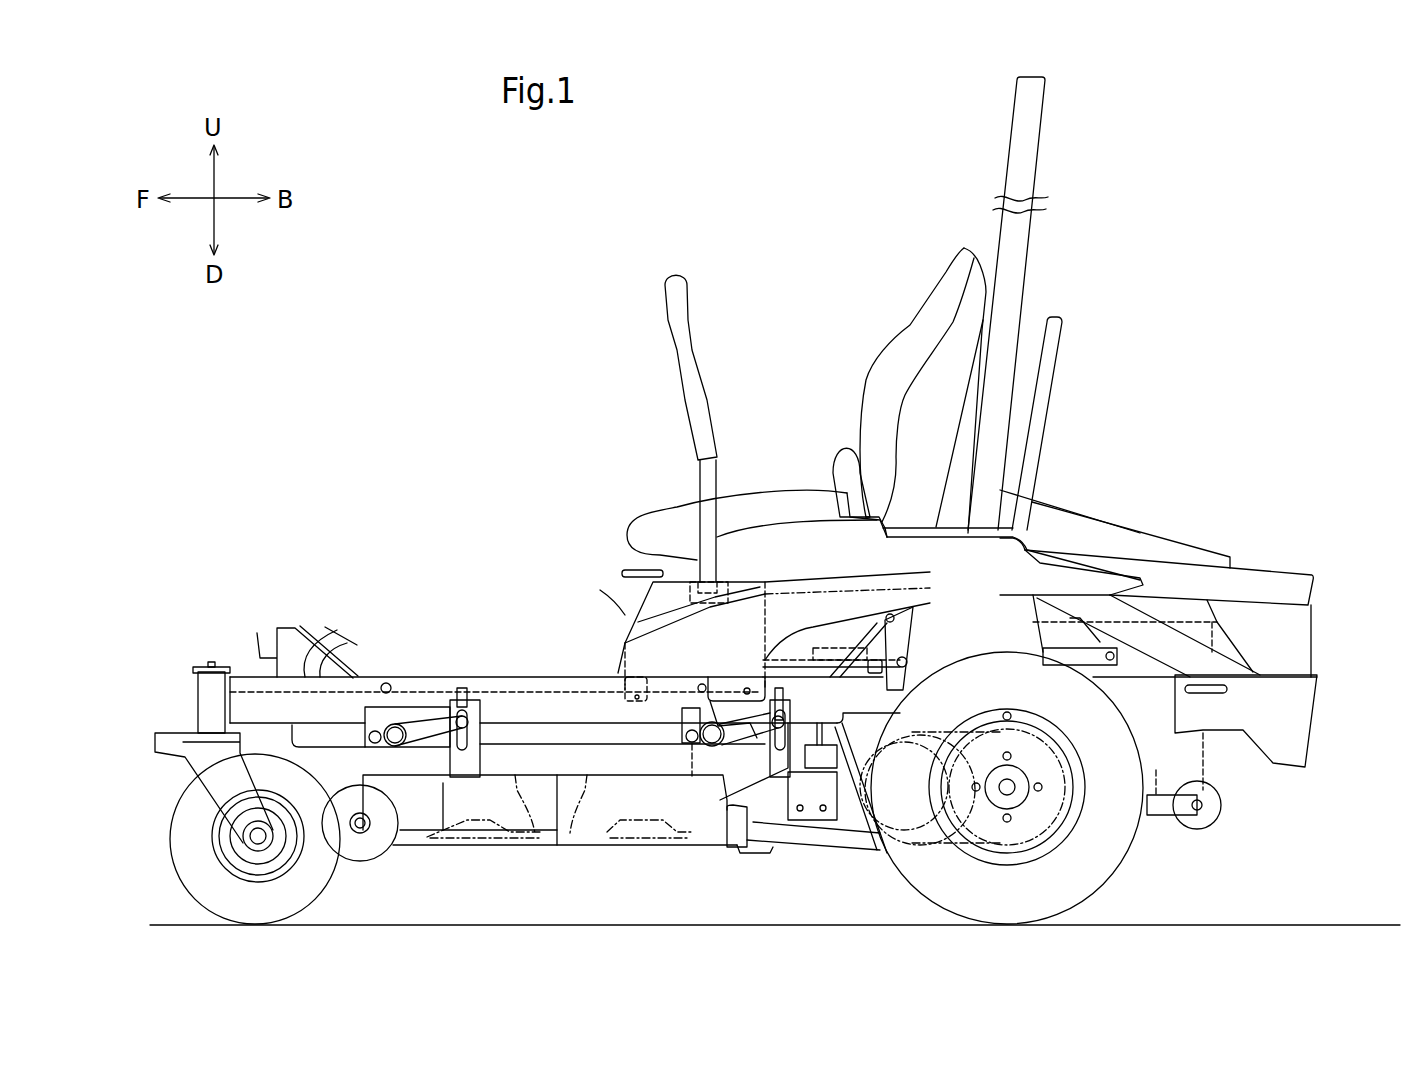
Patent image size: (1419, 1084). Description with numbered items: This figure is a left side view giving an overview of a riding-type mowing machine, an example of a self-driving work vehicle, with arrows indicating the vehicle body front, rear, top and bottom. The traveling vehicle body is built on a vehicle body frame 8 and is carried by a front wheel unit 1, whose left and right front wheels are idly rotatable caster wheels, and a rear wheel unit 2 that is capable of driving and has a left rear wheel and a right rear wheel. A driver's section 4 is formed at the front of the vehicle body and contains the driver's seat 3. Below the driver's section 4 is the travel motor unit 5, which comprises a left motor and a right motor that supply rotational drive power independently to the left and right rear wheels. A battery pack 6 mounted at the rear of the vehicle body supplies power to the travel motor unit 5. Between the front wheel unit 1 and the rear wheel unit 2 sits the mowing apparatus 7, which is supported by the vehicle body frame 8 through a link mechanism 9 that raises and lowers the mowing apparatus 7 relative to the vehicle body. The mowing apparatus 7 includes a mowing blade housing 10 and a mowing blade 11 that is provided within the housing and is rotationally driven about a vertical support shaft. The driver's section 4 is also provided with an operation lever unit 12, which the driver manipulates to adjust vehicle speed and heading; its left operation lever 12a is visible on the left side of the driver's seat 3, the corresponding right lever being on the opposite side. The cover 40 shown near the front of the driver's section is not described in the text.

The front wheel unit 1 is at (200, 853).
The rear wheel unit 2 is at (1085, 855).
The driver's seat 3 is at (888, 375).
The driver's section 4 is at (752, 216).
The travel motor unit 5 is at (878, 847).
The battery pack 6 is at (1216, 762).
The mowing apparatus 7 is at (690, 855).
The vehicle body frame 8 is at (561, 708).
The link mechanism 9 is at (482, 652).
The mowing blade housing 10 is at (593, 812).
The mowing blade 11 is at (642, 842).
The operation lever unit 12 is at (678, 401).
The left operation lever 12a is at (690, 335).
The cover 40 is at (627, 616).